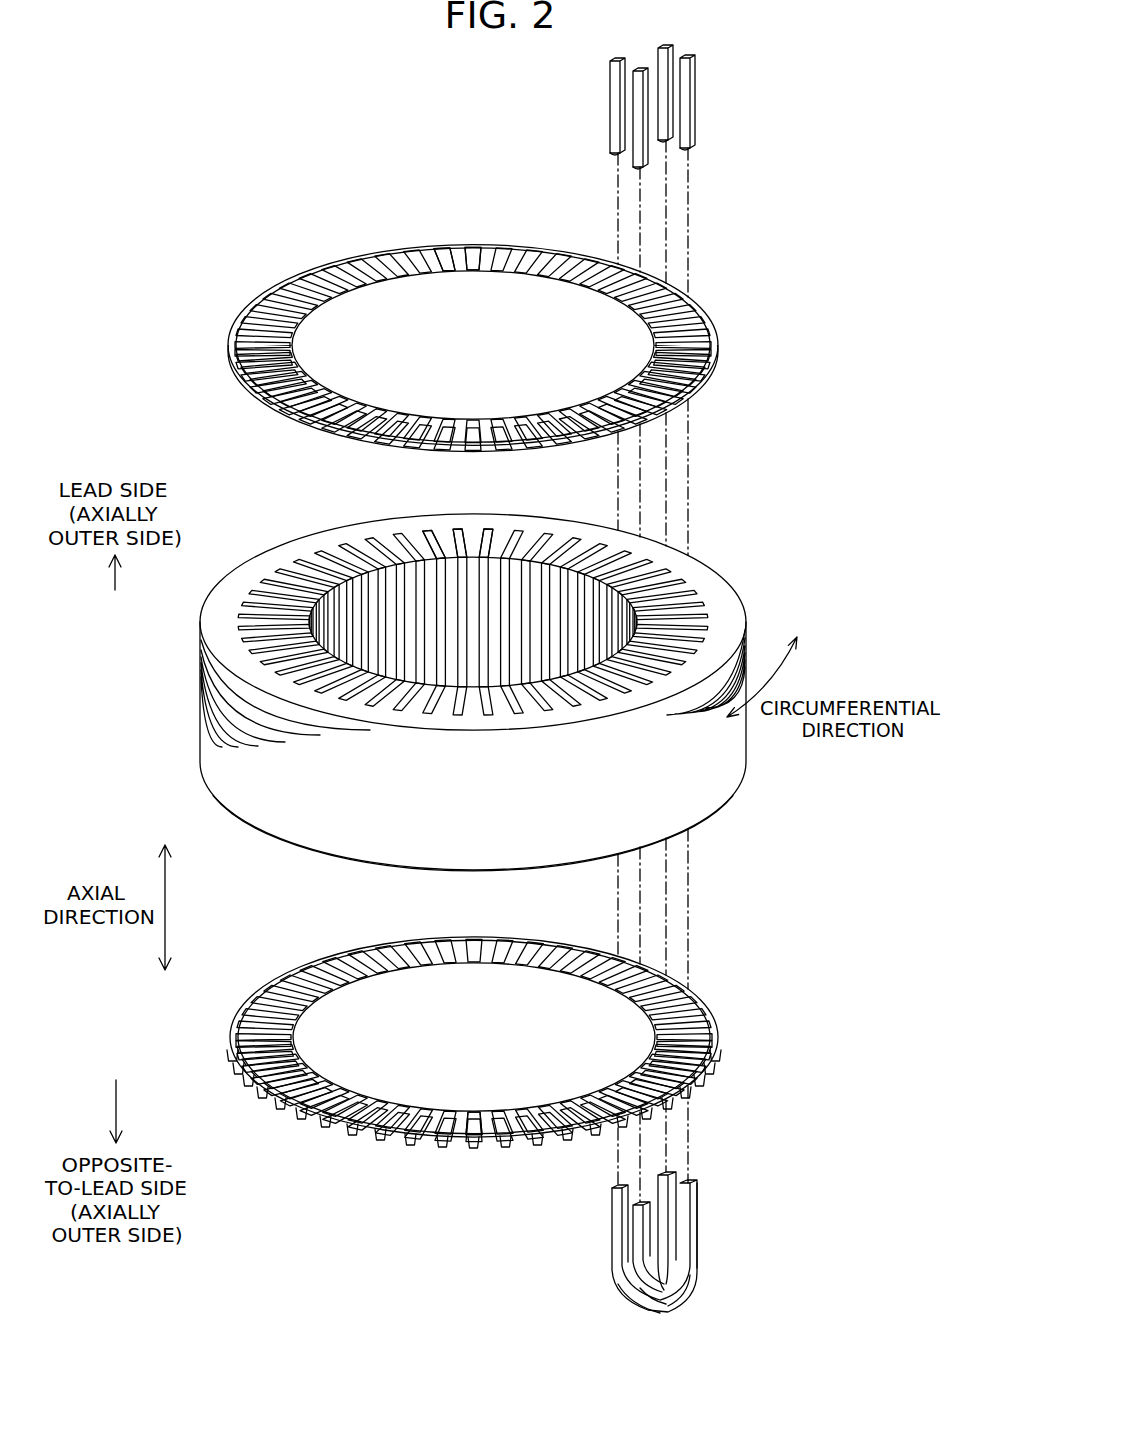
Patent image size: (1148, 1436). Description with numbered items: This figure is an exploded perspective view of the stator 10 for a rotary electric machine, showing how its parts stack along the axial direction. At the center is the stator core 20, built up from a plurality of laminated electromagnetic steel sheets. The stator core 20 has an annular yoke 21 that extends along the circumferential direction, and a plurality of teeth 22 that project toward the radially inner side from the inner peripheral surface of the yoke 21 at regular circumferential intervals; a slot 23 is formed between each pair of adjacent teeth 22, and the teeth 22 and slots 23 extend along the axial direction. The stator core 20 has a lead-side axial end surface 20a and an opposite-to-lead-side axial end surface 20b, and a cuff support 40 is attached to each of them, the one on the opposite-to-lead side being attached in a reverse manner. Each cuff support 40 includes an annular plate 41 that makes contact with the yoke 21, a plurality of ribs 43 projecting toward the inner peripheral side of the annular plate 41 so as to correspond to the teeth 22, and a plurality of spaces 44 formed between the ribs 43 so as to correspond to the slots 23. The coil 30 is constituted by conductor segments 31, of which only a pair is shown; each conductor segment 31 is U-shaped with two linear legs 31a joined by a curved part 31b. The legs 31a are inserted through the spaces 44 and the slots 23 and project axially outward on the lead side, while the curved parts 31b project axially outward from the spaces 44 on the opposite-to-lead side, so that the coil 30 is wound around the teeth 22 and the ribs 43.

The stator 10 is at (181, 454).
The stator core 20 is at (762, 772).
The axial end surface 20a is at (712, 570).
The axial end surface 20b is at (713, 800).
The yoke 21 is at (733, 597).
The teeth 22 is at (443, 533).
The slot 23 is at (488, 540).
The coil 30 is at (583, 1256).
The conductor segment 31 is at (692, 90).
The leg 31a is at (692, 117).
The curved part 31b is at (672, 1302).
The cuff support 40 is at (736, 280).
The annular plate 41 is at (713, 348).
The ribs 43 is at (447, 248).
The spaces 44 is at (460, 250).